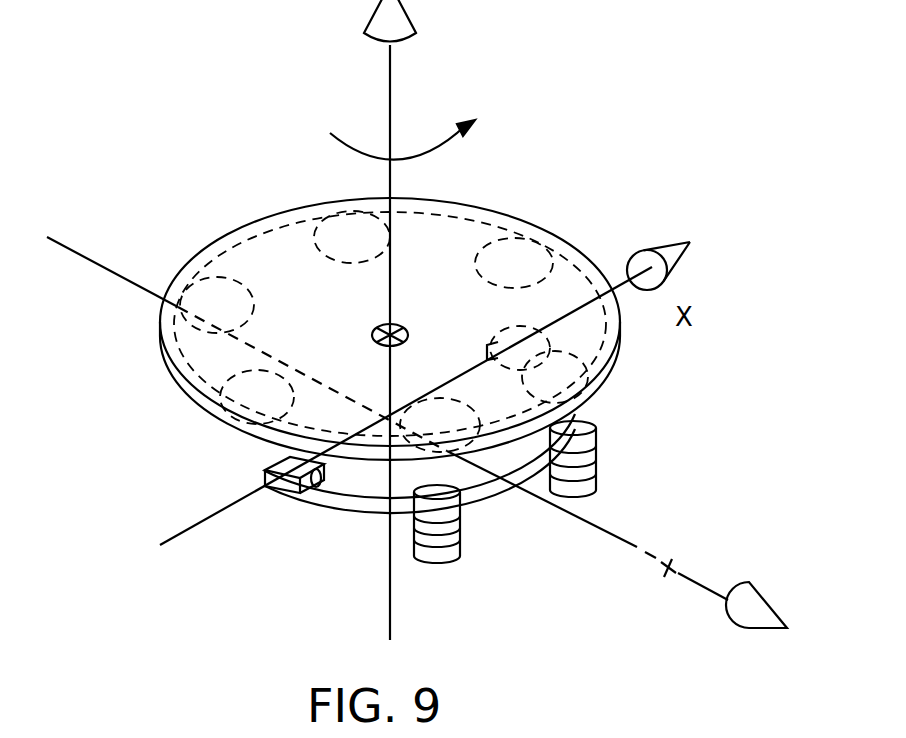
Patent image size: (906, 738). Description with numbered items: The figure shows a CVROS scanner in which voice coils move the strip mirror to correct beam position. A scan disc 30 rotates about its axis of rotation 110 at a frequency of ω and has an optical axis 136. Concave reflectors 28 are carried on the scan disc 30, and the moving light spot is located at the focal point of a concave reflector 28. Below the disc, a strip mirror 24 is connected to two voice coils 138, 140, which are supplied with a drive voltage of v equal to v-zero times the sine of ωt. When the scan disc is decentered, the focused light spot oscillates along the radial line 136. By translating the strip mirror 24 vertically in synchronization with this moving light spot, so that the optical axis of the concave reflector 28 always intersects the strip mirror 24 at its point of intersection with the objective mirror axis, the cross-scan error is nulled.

The axis of rotation 110 is at (400, 89).
The optical axis 136 is at (80, 252).
The scan disc 30 is at (492, 208).
The concave reflector 28 is at (480, 402).
The strip mirror 24 is at (338, 510).
The voice coil 138 is at (446, 566).
The voice coil 140 is at (593, 494).